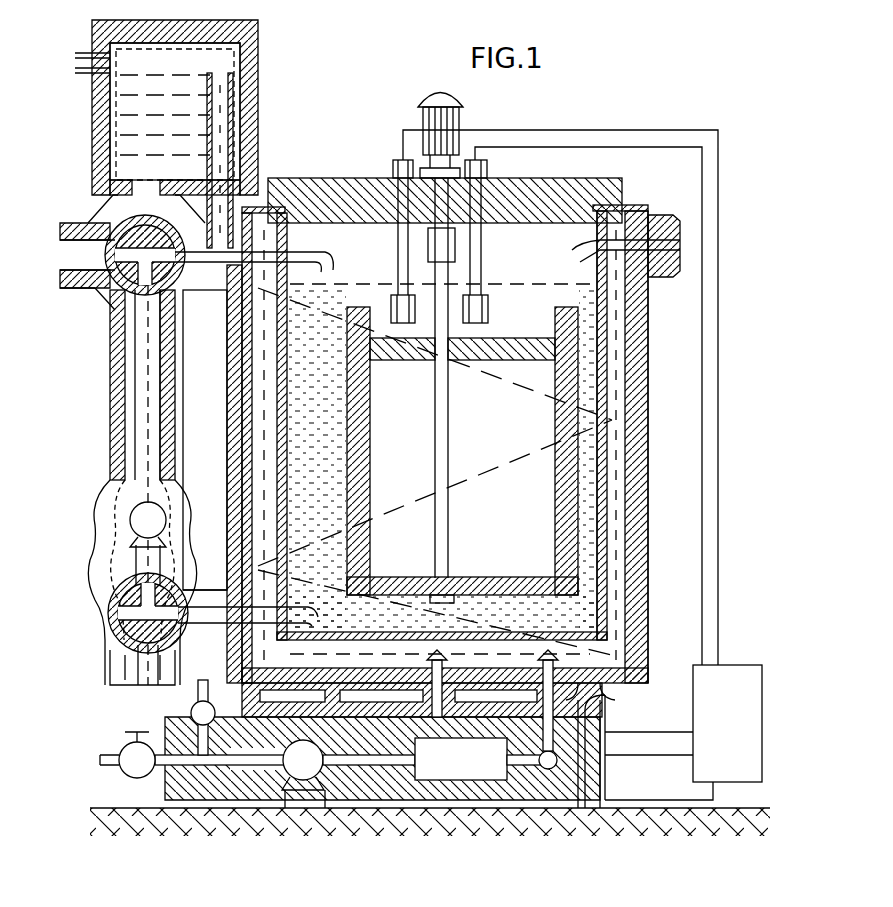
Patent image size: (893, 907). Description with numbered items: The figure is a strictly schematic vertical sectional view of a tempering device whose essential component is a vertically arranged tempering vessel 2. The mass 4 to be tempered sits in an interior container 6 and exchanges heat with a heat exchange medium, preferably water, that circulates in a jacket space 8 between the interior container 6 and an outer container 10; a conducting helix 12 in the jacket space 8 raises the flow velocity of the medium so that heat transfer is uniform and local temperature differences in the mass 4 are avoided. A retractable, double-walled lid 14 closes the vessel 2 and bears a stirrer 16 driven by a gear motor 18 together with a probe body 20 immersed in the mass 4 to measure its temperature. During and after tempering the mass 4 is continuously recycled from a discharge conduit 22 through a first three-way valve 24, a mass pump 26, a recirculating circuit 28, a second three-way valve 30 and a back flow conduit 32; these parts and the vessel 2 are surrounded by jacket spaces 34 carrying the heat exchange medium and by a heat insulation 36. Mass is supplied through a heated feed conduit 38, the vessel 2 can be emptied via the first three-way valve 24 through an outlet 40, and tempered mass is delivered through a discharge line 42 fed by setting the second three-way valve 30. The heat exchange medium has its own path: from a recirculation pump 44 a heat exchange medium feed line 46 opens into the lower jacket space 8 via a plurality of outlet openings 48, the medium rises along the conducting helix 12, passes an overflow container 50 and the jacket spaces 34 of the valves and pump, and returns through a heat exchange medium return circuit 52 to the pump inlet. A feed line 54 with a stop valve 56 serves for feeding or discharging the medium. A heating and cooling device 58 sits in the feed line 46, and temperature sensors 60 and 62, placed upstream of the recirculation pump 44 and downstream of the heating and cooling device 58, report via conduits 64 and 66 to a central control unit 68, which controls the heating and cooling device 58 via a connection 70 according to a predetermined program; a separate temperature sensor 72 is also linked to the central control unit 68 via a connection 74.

The tempering vessel 2 is at (663, 420).
The mass 4 is at (592, 296).
The interior container 6 is at (606, 356).
The jacket space 8 is at (625, 440).
The outer container 10 is at (600, 462).
The conducting helix 12 is at (500, 470).
The retractable lid 14 is at (548, 180).
The stirrer 16 is at (562, 538).
The gear motor 18 is at (425, 118).
The probe body 20 is at (480, 305).
The discharge conduit 22 is at (215, 592).
The first three-way valve 24 is at (118, 615).
The mass pump 26 is at (131, 520).
The recirculating circuit 28 is at (148, 396).
The second three-way valve 30 is at (105, 300).
The back flow conduit 32 is at (212, 290).
The jacket spaces 34 is at (136, 356).
The heat insulation 36 is at (116, 436).
The heated feed conduit 38 is at (681, 245).
The outlet 40 is at (145, 683).
The discharge line 42 is at (106, 250).
The recirculation pump 44 is at (300, 782).
The heat exchange medium feed line 46 is at (380, 790).
The outlet openings 48 is at (548, 640).
The overflow container 50 is at (252, 100).
The heat exchange medium return circuit 52 is at (225, 775).
The supply pipe 54 is at (112, 765).
The stop valve 56 is at (137, 778).
The heating and cooling device 58 is at (455, 782).
The heat exchange medium temperature sensor 60 is at (191, 713).
The heat exchange medium temperature sensor 62 is at (548, 770).
The conduit 64 is at (292, 735).
The conduit 66 is at (656, 732).
The central control unit 68 is at (741, 730).
The connection 70 is at (690, 810).
The separate temperature sensor 72 is at (393, 305).
The connection 74 is at (705, 631).